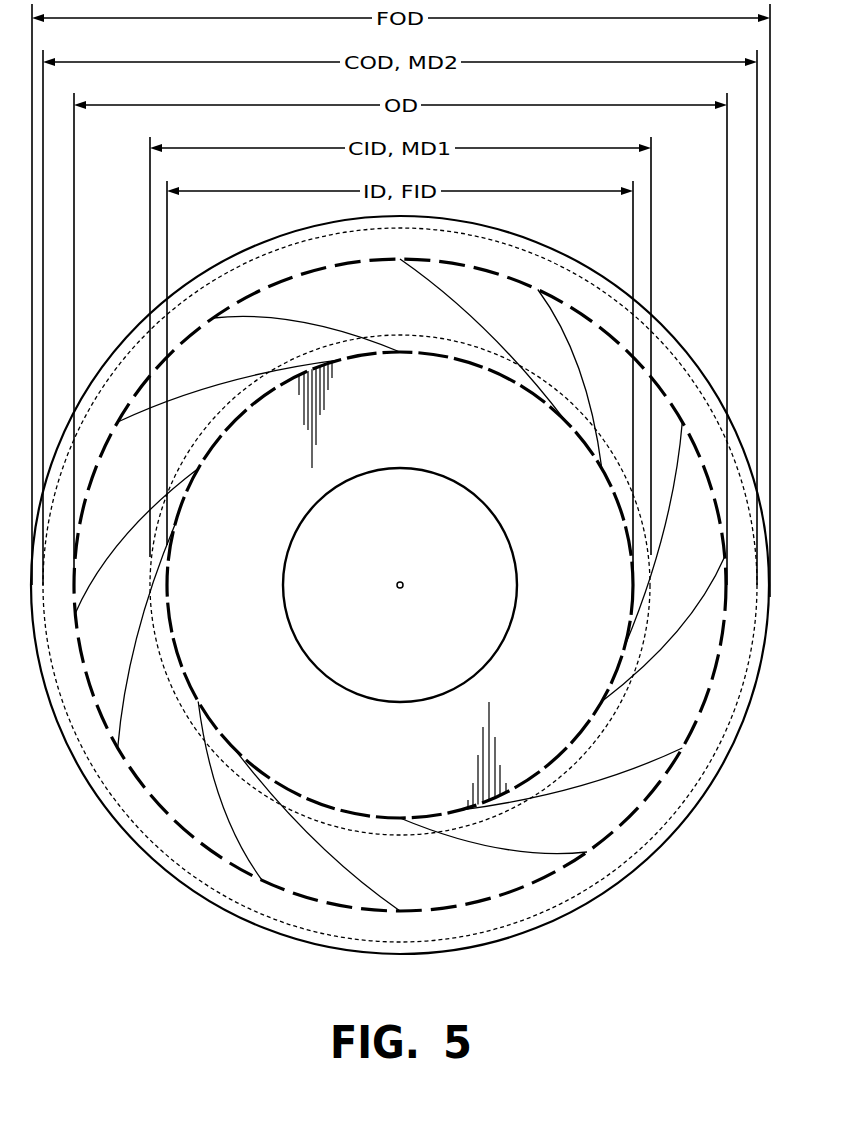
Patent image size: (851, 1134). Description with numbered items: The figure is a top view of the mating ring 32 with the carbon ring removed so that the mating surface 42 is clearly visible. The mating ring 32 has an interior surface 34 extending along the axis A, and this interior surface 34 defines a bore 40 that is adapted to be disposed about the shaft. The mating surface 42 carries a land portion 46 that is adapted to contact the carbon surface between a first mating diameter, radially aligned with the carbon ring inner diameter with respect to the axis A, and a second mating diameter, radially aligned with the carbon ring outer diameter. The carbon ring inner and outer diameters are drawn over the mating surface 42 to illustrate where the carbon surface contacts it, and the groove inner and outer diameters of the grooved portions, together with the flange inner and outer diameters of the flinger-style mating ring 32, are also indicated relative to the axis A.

The mating ring 32 is at (590, 1010).
The interior surface 34 is at (298, 645).
The bore 40 is at (355, 648).
The mating surface 42 is at (578, 874).
The land portion 46 is at (136, 693).
The axis A is at (403, 586).